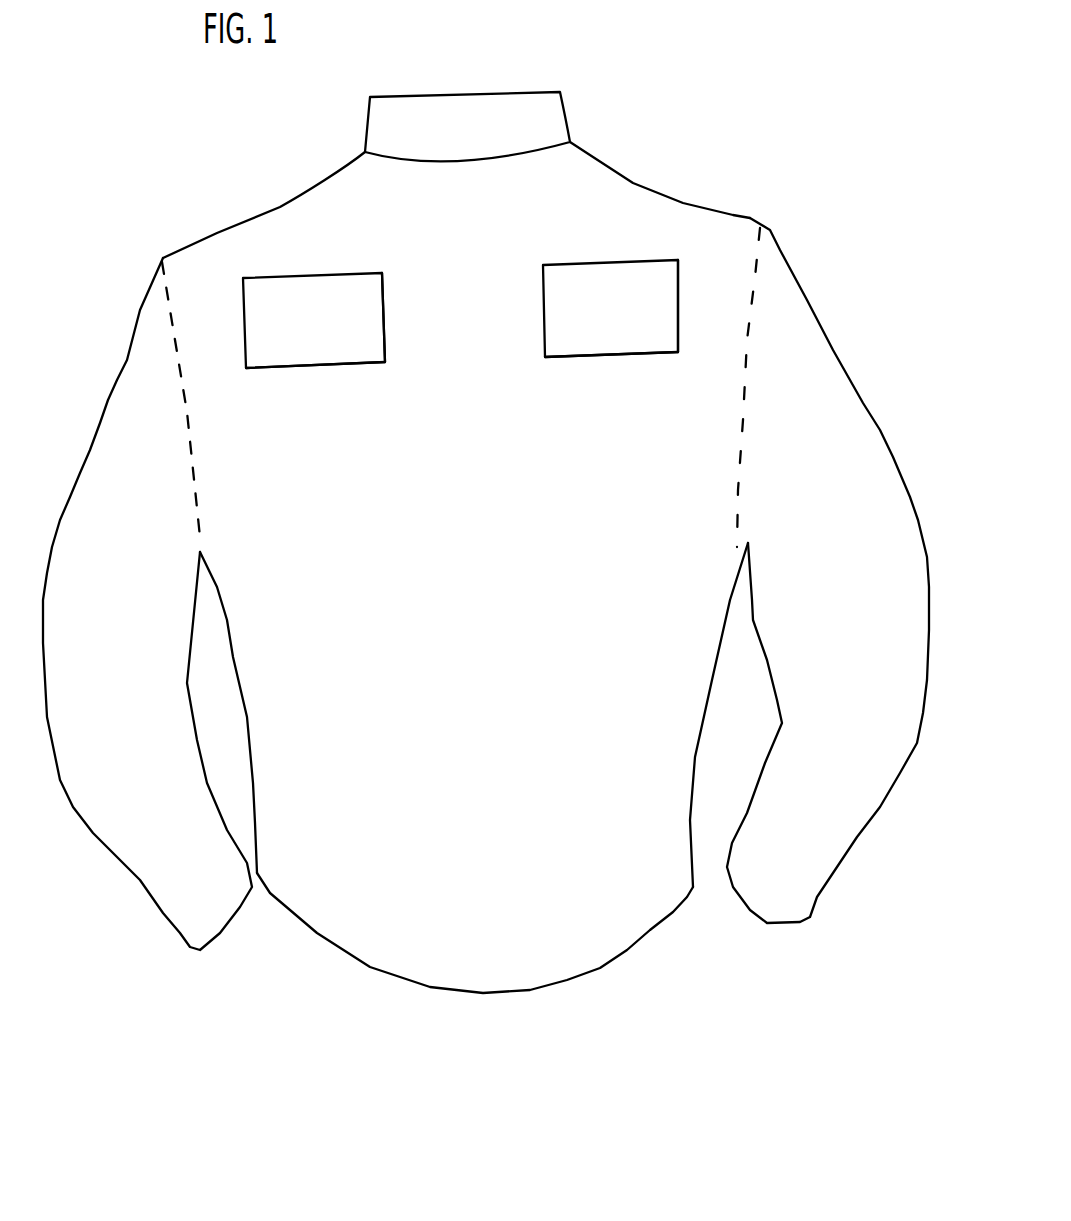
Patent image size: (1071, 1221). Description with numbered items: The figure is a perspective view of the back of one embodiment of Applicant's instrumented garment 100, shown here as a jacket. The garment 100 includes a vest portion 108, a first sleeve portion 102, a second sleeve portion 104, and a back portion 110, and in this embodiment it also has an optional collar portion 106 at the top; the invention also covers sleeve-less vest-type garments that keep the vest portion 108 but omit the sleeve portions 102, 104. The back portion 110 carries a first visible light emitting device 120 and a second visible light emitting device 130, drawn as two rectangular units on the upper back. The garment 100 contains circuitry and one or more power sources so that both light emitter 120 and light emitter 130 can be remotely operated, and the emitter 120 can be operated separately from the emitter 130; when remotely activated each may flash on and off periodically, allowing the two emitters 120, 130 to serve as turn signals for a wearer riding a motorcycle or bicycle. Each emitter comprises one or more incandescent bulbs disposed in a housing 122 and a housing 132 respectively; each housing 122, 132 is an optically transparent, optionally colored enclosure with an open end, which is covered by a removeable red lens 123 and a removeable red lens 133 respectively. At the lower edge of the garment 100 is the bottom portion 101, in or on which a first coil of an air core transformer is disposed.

The garment 100 is at (652, 962).
The bottom portion 101 is at (513, 980).
The first sleeve portion 102 is at (848, 833).
The second sleeve portion 104 is at (137, 840).
The collar portion 106 is at (528, 112).
The vest portion 108 is at (477, 541).
The back portion 110 is at (716, 373).
The visible light emitting device 120 is at (328, 320).
The housing 122 is at (385, 305).
The removeable red lens 123 is at (357, 348).
The visible light emitting device 130 is at (640, 305).
The housing 132 is at (753, 270).
The removeable red lens 133 is at (618, 340).